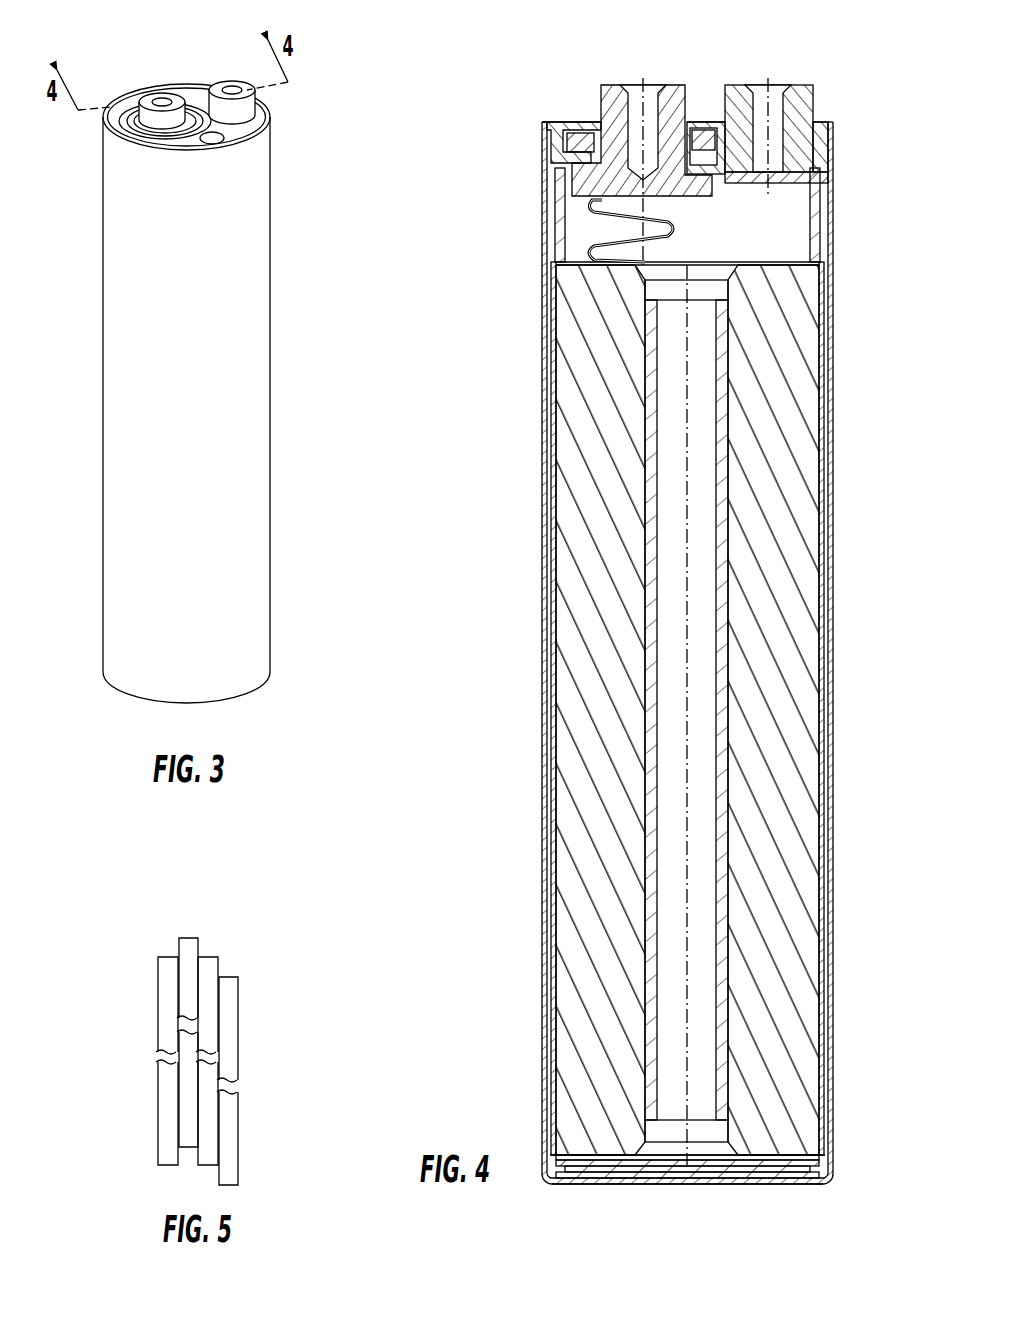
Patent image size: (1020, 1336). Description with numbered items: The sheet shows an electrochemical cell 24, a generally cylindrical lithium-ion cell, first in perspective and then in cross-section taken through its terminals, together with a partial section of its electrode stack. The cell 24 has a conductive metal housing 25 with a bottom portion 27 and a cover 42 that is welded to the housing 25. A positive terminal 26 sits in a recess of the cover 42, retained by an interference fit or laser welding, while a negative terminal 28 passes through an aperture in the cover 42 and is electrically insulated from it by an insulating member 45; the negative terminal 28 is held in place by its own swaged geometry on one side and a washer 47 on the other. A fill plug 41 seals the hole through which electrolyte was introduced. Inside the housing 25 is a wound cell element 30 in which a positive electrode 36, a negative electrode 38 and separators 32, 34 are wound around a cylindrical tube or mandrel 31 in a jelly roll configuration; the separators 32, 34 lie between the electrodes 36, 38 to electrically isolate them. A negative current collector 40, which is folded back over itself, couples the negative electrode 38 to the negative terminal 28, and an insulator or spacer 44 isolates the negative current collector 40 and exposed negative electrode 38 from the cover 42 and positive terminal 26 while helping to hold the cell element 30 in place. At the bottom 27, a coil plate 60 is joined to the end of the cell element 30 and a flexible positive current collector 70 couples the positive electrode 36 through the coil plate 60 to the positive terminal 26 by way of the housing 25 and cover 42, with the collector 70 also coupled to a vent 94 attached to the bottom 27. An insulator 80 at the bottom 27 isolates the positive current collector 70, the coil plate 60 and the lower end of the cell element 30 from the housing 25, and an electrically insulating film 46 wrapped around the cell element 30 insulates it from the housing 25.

In FIG. 3, the electrochemical cell 24 is at (300, 275).
In FIG. 4, the electrochemical cell 24 is at (498, 352).
In FIG. 3, the housing 25 is at (262, 405).
In FIG. 4, the housing 25 is at (828, 232).
In FIG. 3, the positive terminal 26 is at (215, 84).
In FIG. 4, the positive terminal 26 is at (793, 92).
In FIG. 4, the bottom portion 27 is at (813, 1185).
In FIG. 3, the negative terminal 28 is at (150, 90).
In FIG. 4, the negative terminal 28 is at (612, 87).
In FIG. 4, the cell element 30 is at (805, 555).
In FIG. 5, the cell element 30 is at (68, 972).
In FIG. 4, the mandrel 31 is at (720, 470).
In FIG. 5, the separator 32 is at (160, 972).
In FIG. 5, the separator 34 is at (205, 960).
In FIG. 5, the positive electrode 36 is at (235, 978).
In FIG. 5, the negative electrode 38 is at (190, 942).
In FIG. 4, the negative current collector 40 is at (678, 240).
In FIG. 3, the fill plug 41 is at (222, 146).
In FIG. 4, the cover 42 is at (555, 130).
In FIG. 4, the spacer 44 is at (558, 232).
In FIG. 4, the insulating member 45 is at (710, 130).
In FIG. 4, the insulating film 46 is at (545, 775).
In FIG. 4, the washer 47 is at (580, 140).
In FIG. 4, the coil plate 60 is at (795, 1162).
In FIG. 4, the positive current collector 70 is at (627, 1173).
In FIG. 4, the insulator 80 is at (556, 1182).
In FIG. 4, the vent 94 is at (683, 1185).